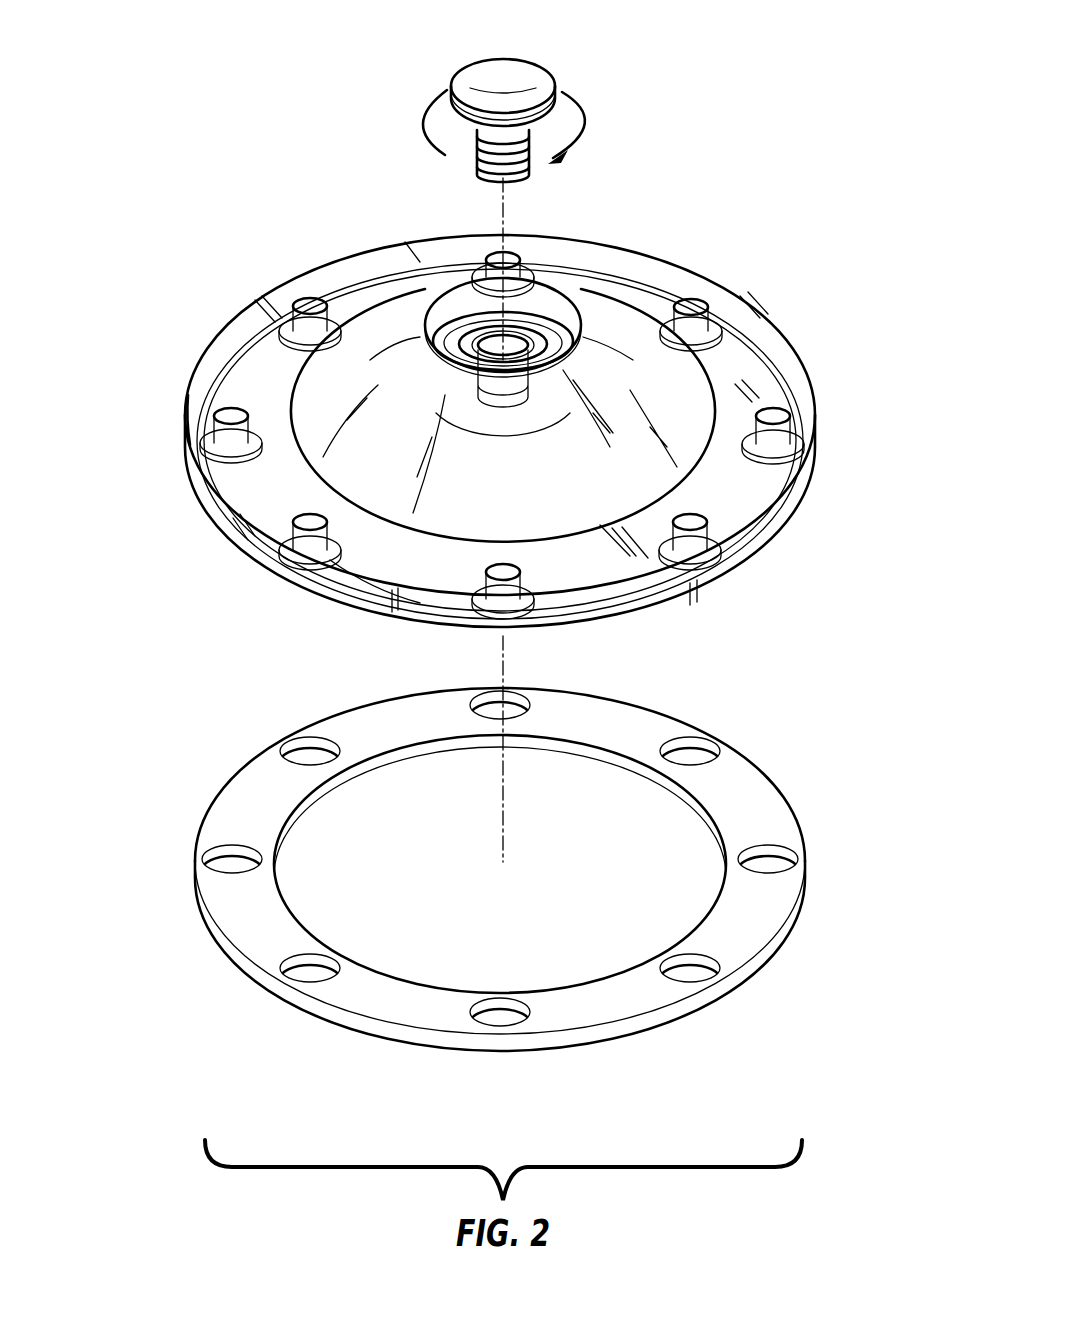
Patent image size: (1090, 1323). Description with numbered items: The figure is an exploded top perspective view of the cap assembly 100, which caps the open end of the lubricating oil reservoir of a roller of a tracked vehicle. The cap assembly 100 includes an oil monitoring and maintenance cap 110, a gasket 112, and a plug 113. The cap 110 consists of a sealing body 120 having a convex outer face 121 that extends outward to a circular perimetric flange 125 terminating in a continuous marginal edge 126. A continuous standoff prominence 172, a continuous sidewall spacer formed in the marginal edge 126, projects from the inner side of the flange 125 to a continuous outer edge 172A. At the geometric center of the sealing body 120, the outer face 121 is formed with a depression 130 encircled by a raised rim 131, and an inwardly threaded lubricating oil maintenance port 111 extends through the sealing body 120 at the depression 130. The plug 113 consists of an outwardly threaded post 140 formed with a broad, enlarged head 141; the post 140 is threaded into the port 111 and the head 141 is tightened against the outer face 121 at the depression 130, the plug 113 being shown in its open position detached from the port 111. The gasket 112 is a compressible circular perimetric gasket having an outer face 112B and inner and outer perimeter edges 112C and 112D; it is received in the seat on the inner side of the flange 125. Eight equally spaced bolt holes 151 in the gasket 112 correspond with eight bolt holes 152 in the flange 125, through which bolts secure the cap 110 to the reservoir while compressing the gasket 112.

The cap assembly 100 is at (738, 48).
The oil monitoring and maintenance cap 110 is at (506, 429).
The lubricating oil maintenance port 111 is at (500, 355).
The gasket 112 is at (524, 877).
The outer face of gasket 112B is at (756, 925).
The inner perimeter edge of gasket 112C is at (640, 766).
The outer perimeter edge of gasket 112D is at (398, 1034).
The plug 113 is at (511, 108).
The sealing body 120 is at (586, 416).
The outer face or side 121 is at (632, 446).
The perimetric flange 125 is at (374, 572).
The marginal edge 126 is at (190, 383).
The depression 130 is at (520, 338).
The raised rim 131 is at (560, 306).
The threaded post 140 is at (478, 152).
The head 141 is at (501, 72).
The bolt holes 151 is at (310, 752).
The bolt holes 152 is at (503, 258).
The continuous standoff prominence 172 is at (820, 455).
The continuous outer edge 172A is at (762, 546).